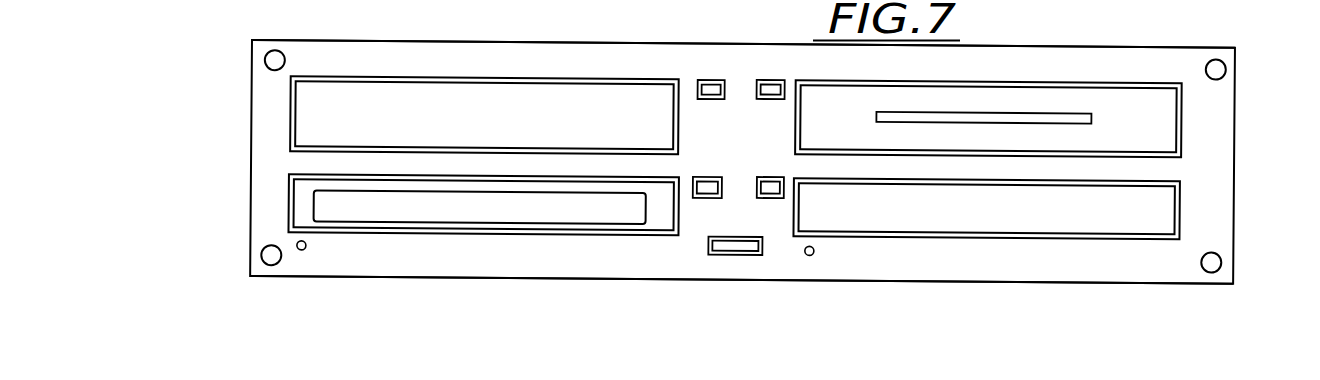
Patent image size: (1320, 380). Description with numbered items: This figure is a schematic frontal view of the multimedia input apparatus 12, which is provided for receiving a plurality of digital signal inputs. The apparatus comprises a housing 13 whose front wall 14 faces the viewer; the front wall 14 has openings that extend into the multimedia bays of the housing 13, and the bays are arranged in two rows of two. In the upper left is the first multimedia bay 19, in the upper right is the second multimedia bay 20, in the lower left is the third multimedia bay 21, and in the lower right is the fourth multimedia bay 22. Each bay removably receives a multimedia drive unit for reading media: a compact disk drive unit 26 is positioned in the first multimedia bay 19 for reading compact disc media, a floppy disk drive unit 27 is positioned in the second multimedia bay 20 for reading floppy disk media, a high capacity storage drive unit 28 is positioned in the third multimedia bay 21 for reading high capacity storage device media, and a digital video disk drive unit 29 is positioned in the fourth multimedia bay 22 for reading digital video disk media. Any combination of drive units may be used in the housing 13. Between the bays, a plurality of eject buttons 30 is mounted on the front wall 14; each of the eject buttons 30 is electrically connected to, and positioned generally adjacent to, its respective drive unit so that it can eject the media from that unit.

The multimedia input apparatus 12 is at (263, 94).
The housing 13 is at (343, 50).
The front wall 14 is at (564, 263).
The first multimedia bay 19 is at (433, 77).
The second multimedia bay 20 is at (1048, 82).
The third multimedia bay 21 is at (290, 211).
The fourth multimedia bay 22 is at (1181, 203).
The compact disk drive unit 26 is at (532, 110).
The floppy disk drive unit 27 is at (1170, 107).
The high capacity storage drive unit 28 is at (660, 224).
The digital video disk drive unit 29 is at (795, 238).
The eject buttons 30 is at (757, 88).